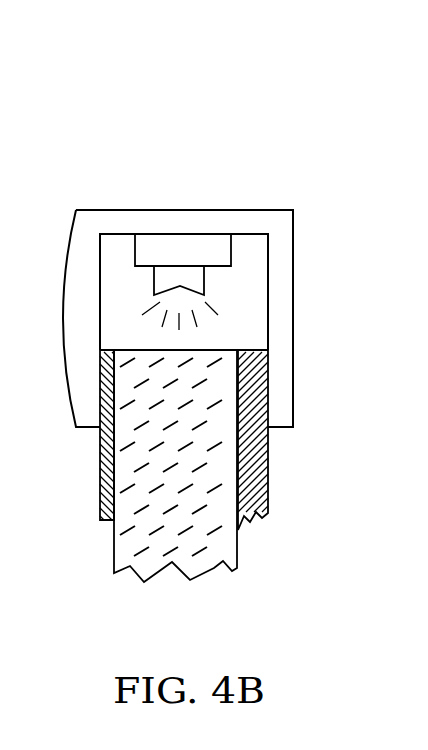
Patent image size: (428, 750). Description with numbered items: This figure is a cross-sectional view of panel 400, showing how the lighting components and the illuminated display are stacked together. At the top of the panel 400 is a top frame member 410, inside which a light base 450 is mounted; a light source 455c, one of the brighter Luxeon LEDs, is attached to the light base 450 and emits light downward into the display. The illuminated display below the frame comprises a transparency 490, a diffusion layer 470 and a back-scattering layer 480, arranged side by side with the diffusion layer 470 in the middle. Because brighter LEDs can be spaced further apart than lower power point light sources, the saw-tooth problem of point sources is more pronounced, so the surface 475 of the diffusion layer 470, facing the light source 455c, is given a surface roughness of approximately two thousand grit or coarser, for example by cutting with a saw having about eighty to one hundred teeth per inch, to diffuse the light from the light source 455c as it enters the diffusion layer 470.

The panel 400 is at (256, 124).
The top frame member 410 is at (162, 210).
The light base 450 is at (147, 233).
The light source 455c is at (207, 290).
The surface 475 is at (130, 348).
The transparency 490 is at (98, 488).
The back-scattering layer 480 is at (268, 493).
The diffusion layer 470 is at (237, 540).